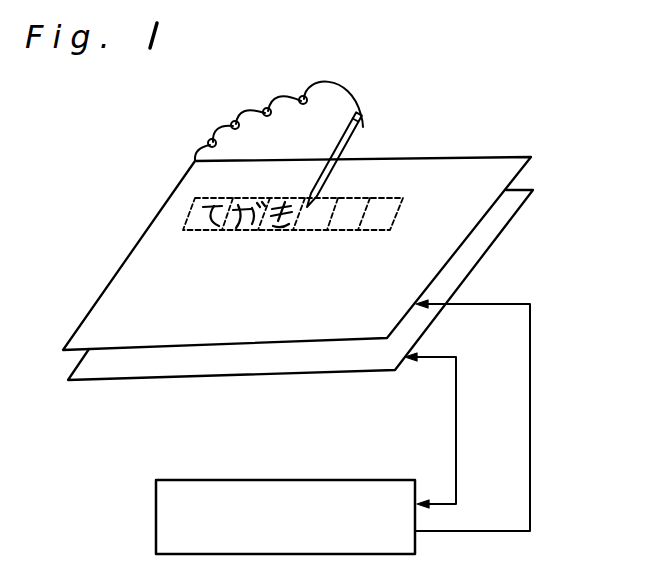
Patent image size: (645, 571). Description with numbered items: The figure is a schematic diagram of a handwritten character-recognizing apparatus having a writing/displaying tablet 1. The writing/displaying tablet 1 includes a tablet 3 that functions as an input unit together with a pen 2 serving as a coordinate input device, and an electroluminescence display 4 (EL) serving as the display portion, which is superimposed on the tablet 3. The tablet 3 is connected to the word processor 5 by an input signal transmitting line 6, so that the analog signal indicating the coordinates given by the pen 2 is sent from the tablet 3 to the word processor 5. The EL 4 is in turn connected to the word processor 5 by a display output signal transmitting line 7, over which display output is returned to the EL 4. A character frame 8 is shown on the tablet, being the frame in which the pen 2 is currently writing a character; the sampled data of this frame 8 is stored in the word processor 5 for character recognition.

The writing/displaying tablet 1 is at (487, 46).
The pen 2 is at (363, 126).
The tablet 3 is at (500, 220).
The electroluminescence display 4 is at (490, 167).
The word processor 5 is at (302, 480).
The input signal transmitting line 6 is at (456, 428).
The display output signal transmitting line 7 is at (532, 398).
The frame 8 is at (322, 212).